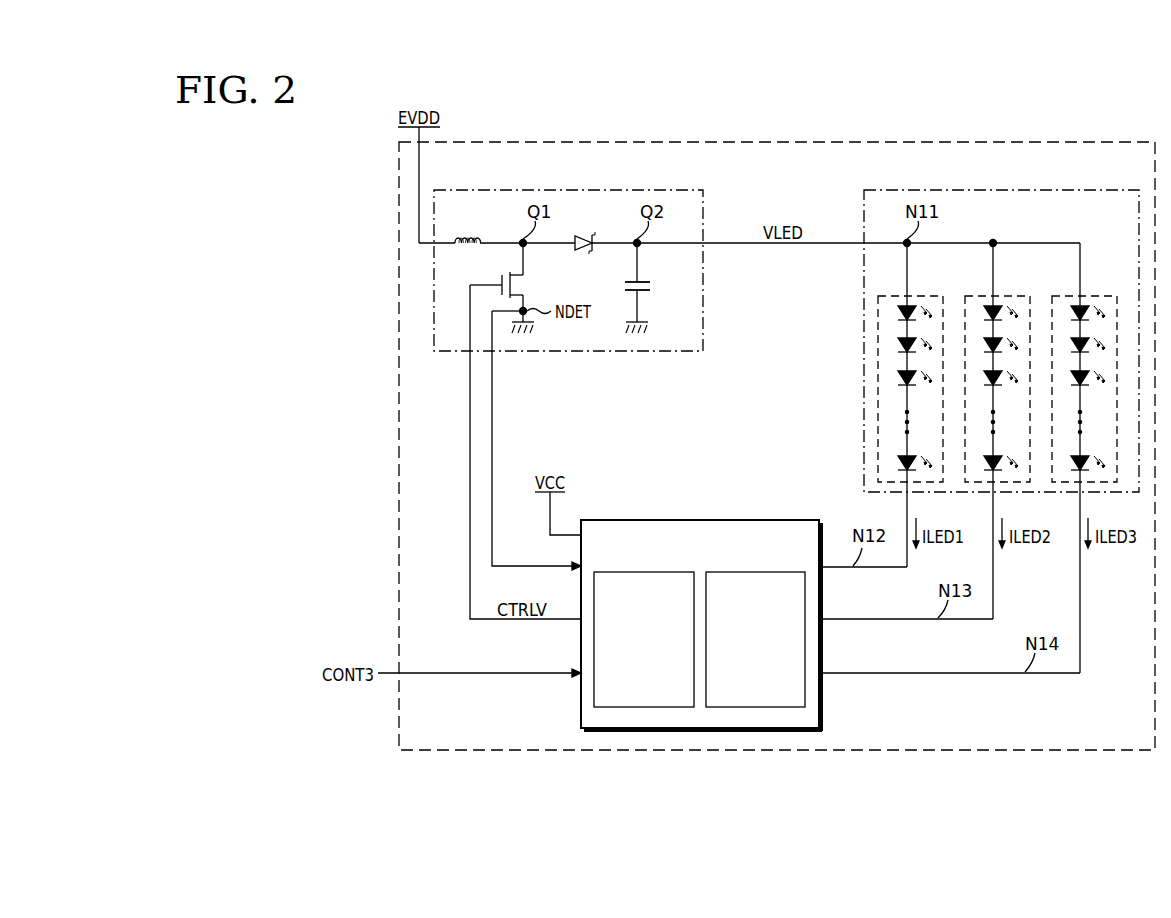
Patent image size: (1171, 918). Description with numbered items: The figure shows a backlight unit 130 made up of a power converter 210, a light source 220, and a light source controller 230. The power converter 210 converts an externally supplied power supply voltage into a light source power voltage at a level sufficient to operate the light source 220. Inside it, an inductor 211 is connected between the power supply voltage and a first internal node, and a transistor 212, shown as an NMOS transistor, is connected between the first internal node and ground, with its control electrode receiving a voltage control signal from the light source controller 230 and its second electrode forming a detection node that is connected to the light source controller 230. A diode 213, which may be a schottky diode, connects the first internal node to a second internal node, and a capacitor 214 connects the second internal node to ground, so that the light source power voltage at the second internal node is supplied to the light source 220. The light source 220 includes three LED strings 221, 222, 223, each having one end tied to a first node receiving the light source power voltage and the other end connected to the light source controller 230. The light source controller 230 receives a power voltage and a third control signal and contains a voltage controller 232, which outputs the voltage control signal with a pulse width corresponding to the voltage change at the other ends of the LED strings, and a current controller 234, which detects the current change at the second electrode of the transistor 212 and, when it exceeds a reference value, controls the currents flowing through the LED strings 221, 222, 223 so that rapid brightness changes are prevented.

The backlight unit 130 is at (997, 142).
The power converter 210 is at (640, 190).
The inductor 211 is at (466, 228).
The transistor 212 is at (511, 282).
The diode 213 is at (586, 232).
The capacitor 214 is at (652, 288).
The light source 220 is at (1075, 190).
The LED string 221 is at (925, 295).
The LED string 222 is at (1012, 295).
The LED string 223 is at (1100, 295).
The light source controller 230 is at (733, 520).
The voltage controller 232 is at (647, 572).
The current controller 234 is at (764, 572).